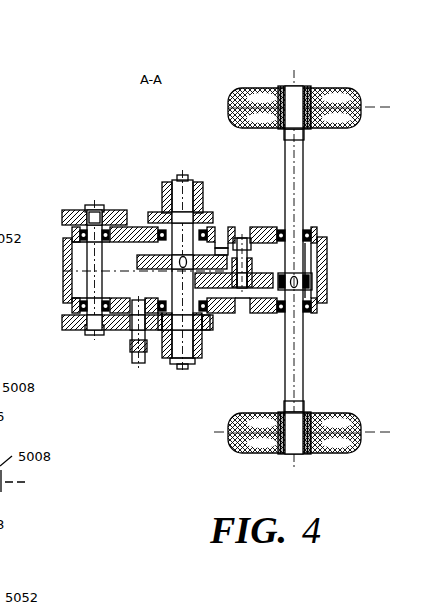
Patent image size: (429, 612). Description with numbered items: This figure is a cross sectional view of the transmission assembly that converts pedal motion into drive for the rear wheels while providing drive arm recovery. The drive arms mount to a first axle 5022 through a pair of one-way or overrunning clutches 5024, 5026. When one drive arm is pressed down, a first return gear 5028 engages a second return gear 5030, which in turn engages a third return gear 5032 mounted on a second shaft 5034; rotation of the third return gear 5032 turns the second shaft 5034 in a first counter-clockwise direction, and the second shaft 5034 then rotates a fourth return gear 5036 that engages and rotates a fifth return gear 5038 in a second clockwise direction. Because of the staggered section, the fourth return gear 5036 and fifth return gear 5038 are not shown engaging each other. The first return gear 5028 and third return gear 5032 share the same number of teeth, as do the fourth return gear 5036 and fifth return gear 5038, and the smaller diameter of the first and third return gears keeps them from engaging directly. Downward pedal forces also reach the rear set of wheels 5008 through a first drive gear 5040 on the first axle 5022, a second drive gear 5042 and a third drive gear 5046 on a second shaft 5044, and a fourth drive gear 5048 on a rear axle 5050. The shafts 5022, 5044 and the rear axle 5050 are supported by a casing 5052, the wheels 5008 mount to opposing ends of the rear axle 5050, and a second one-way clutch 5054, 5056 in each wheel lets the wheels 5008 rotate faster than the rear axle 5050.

The rear set of wheels 5008 is at (352, 94).
The first axle 5022 is at (180, 283).
The one-way clutch 5024 is at (199, 305).
The one-way clutch 5026 is at (165, 205).
The first return gear 5028 is at (162, 318).
The second return gear 5030 is at (128, 322).
The third return gear 5032 is at (75, 330).
The second shaft 5034 is at (90, 286).
The fourth return gear 5036 is at (76, 210).
The fifth return gear 5038 is at (158, 212).
The first drive gear 5040 is at (146, 256).
The second drive gear 5042 is at (229, 256).
The second shaft 5044 is at (245, 250).
The third drive gear 5046 is at (221, 288).
The fourth drive gear 5048 is at (315, 280).
The rear axle 5050 is at (296, 205).
The casing 5052 is at (195, 270).
The second one-way clutch 5054 is at (281, 450).
The second one-way clutch 5056 is at (290, 76).